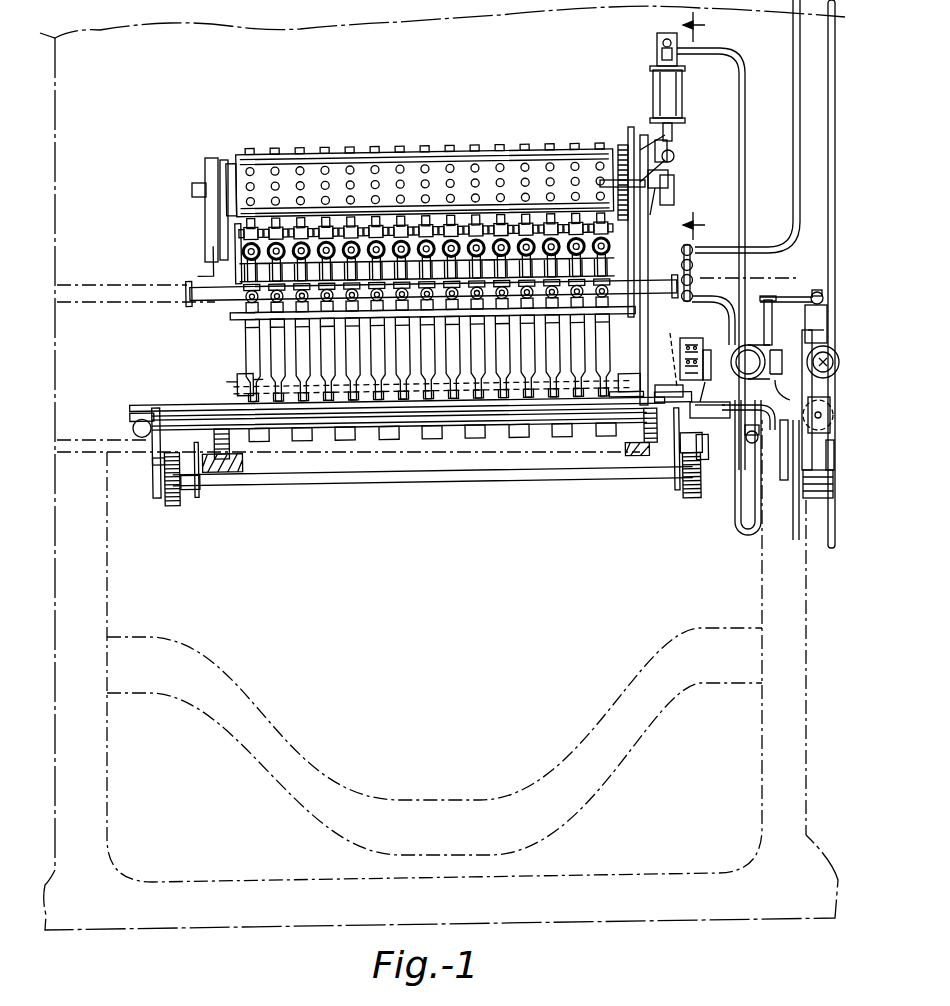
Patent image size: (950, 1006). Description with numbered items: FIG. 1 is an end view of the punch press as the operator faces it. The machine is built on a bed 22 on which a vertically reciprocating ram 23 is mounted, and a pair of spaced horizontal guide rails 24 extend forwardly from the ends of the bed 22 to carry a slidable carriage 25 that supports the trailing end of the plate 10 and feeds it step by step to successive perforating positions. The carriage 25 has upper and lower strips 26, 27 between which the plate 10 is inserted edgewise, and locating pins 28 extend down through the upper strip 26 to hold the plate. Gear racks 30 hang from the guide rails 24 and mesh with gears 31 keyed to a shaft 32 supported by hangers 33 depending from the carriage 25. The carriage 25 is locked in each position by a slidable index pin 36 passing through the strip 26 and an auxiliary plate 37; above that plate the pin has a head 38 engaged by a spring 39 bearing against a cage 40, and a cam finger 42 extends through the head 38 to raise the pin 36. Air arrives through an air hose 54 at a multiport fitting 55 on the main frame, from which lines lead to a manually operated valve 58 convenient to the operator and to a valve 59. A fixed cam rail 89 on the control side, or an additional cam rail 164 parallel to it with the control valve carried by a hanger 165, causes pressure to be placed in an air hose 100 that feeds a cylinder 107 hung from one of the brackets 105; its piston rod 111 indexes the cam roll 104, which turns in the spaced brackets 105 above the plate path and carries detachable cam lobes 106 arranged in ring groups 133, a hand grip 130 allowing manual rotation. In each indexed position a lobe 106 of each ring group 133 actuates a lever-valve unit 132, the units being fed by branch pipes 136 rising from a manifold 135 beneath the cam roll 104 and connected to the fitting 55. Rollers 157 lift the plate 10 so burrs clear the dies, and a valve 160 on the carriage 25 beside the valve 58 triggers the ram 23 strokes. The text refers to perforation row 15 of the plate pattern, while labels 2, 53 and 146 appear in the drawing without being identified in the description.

The filling machine 2 is at (405, 110).
The plate 10 is at (287, 425).
The perforation row 15 is at (711, 126).
The bed 22 is at (760, 588).
The ram 23 is at (60, 167).
The guide rails 24 is at (128, 423).
The carriage 25 is at (157, 398).
The upper strip 26 is at (215, 402).
The lower strip 27 is at (322, 430).
The locating pins 28 is at (238, 372).
The gear racks 30 is at (176, 452).
The gears 31 is at (170, 503).
The shaft 32 is at (395, 474).
The hangers 33 is at (194, 495).
The index pin 36 is at (708, 392).
The auxiliary plate 37 is at (660, 385).
The head 38 is at (662, 349).
The spring 39 is at (703, 352).
The cage 40 is at (690, 338).
The cam finger 42 is at (719, 355).
The support 53 is at (806, 500).
The air hose 54 is at (793, 100).
The multiport fitting 55 is at (684, 248).
The manually operated valve 58 is at (757, 343).
The valve 59 is at (817, 316).
The cam rail 89 is at (777, 382).
The air hose 100 is at (746, 160).
The cam roll 104 is at (450, 152).
The brackets 105 is at (212, 158).
The cam lobes 106 is at (503, 152).
The cylinder 107 is at (684, 100).
The piston rod 111 is at (680, 142).
The hand grip 130 is at (612, 168).
The lever-valve unit 132 is at (238, 229).
The ring group 133 is at (345, 218).
The manifold 135 is at (645, 283).
The air branch pipes 136 is at (262, 270).
The nozzle bar 146 is at (243, 333).
The rollers 157 is at (473, 440).
The valve 160 is at (807, 365).
The additional cam rail 164 is at (734, 437).
The hanger 165 is at (793, 442).